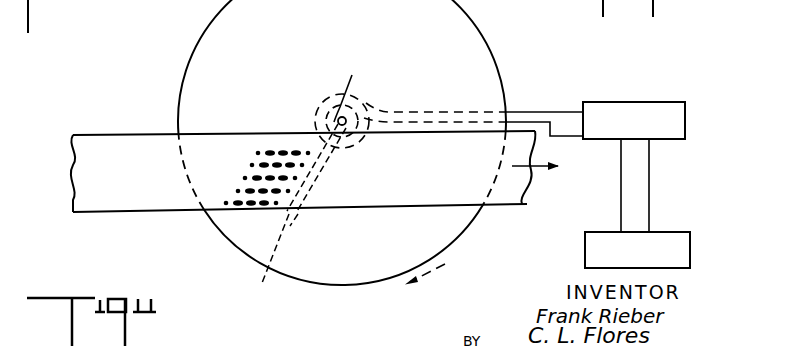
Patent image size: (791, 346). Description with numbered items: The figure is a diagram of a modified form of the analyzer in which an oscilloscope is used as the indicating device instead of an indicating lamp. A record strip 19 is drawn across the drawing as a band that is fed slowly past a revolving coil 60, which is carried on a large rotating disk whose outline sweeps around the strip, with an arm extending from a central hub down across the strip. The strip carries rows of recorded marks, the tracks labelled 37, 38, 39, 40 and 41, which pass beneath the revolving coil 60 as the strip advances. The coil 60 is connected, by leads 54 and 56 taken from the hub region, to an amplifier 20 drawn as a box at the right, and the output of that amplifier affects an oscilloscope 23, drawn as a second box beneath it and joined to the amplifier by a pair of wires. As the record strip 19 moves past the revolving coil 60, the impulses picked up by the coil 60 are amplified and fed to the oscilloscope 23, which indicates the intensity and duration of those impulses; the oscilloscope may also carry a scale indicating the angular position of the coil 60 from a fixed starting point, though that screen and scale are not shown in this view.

The record strip 19 is at (522, 204).
The amplifier 20 is at (672, 102).
The oscilloscope 23 is at (688, 232).
The first record track 37 is at (258, 152).
The second record track 38 is at (250, 164).
The third record track 39 is at (243, 178).
The fourth record track 40 is at (236, 191).
The fifth record track 41 is at (223, 204).
The pickup lead 54 is at (350, 91).
The pickup head hub 56 is at (325, 122).
The revolving coil 60 is at (342, 151).